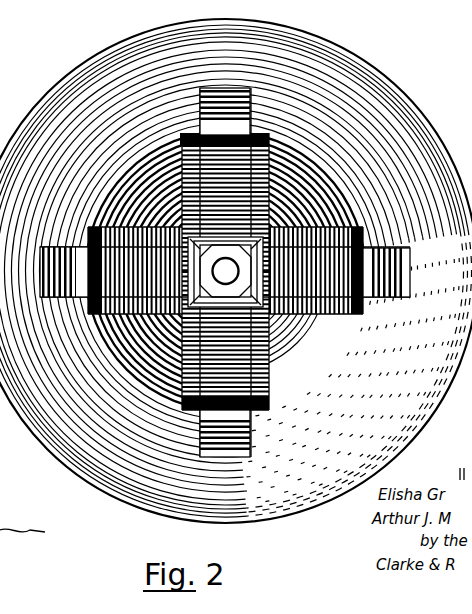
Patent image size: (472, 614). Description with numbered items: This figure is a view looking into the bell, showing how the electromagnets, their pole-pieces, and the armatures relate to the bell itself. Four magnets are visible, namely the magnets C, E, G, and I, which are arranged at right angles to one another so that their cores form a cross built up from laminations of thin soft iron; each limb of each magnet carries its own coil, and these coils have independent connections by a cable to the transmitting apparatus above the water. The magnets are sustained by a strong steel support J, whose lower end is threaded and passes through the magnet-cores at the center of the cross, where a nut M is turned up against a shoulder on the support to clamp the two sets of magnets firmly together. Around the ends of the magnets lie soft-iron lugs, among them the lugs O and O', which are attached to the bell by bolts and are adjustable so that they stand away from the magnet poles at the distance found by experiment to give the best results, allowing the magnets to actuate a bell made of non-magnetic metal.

The lug O is at (56, 289).
The lug O' is at (243, 108).
The magnet E is at (270, 172).
The magnet I is at (269, 367).
The magnet C is at (112, 314).
The magnet G is at (324, 314).
The nut M is at (248, 256).
The steel support J is at (179, 339).